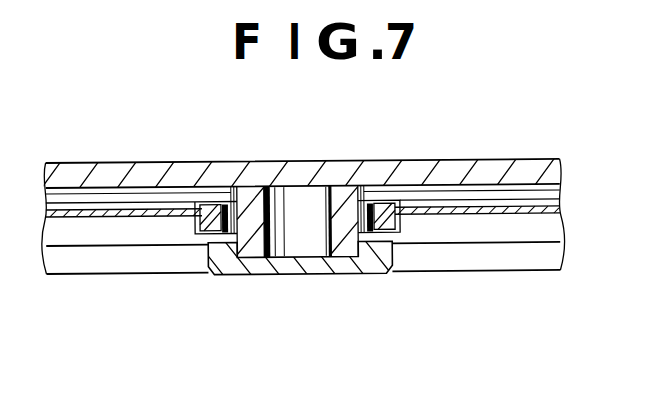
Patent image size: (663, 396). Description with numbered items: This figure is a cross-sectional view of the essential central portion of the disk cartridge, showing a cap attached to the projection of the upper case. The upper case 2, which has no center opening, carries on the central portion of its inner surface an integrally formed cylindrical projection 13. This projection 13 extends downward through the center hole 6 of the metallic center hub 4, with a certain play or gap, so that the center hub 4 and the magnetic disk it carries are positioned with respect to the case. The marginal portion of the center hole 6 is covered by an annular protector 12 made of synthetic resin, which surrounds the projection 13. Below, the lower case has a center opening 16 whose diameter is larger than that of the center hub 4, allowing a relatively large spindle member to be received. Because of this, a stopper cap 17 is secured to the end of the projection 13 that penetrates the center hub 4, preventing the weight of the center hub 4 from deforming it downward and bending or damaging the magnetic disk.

The upper case 2 is at (157, 183).
The center hub 4 is at (481, 216).
The center hole 6 is at (366, 186).
The annular protector 12 is at (397, 215).
The cylindrical projection 13 is at (254, 241).
The center opening 16 is at (96, 255).
The stopper cap 17 is at (218, 259).